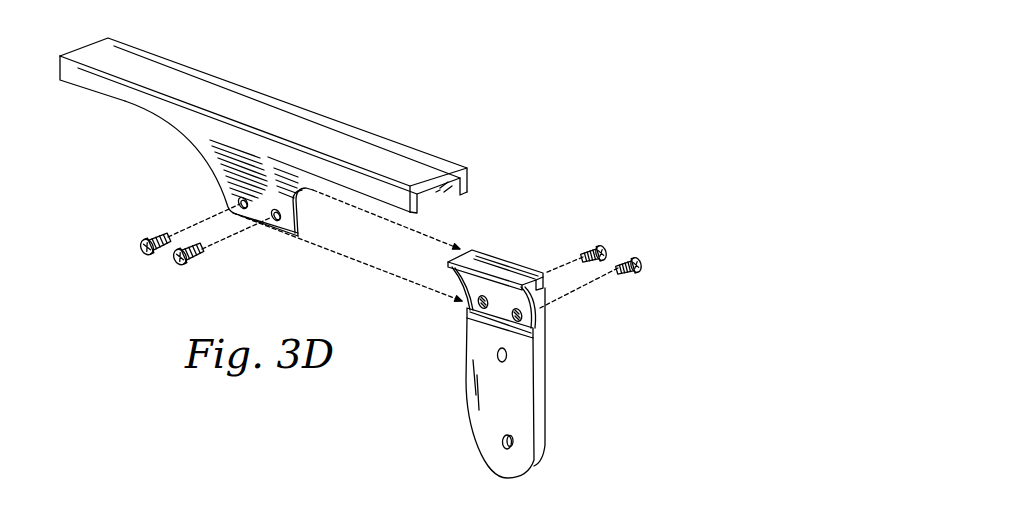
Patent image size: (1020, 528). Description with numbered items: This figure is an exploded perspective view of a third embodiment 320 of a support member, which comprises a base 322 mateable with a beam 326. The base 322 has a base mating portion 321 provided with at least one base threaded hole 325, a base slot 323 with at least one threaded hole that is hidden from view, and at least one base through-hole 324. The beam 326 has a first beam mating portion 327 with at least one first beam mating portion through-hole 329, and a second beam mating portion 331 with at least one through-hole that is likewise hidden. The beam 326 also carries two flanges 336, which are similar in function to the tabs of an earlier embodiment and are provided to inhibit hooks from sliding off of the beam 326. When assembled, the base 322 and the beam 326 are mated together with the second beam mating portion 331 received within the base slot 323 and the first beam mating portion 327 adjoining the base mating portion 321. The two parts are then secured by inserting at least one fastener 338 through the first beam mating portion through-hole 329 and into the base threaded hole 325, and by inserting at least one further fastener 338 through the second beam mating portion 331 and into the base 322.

The third embodiment of a support member 320 is at (152, 332).
The base mating portion 321 is at (512, 297).
The base 322 is at (547, 352).
The base slot 323 is at (508, 261).
The base through-hole 324 is at (513, 437).
The base threaded hole 325 is at (475, 310).
The beam 326 is at (273, 98).
The first beam mating portion 327 is at (233, 181).
The first beam mating portion through-hole 329 is at (279, 222).
The second beam mating portion 331 is at (305, 196).
The flanges 336 is at (467, 190).
The fastener 338 is at (185, 268).